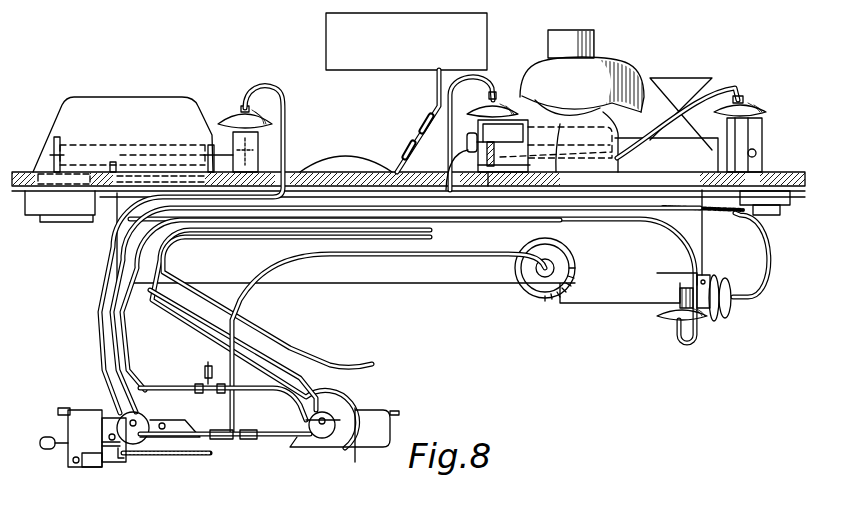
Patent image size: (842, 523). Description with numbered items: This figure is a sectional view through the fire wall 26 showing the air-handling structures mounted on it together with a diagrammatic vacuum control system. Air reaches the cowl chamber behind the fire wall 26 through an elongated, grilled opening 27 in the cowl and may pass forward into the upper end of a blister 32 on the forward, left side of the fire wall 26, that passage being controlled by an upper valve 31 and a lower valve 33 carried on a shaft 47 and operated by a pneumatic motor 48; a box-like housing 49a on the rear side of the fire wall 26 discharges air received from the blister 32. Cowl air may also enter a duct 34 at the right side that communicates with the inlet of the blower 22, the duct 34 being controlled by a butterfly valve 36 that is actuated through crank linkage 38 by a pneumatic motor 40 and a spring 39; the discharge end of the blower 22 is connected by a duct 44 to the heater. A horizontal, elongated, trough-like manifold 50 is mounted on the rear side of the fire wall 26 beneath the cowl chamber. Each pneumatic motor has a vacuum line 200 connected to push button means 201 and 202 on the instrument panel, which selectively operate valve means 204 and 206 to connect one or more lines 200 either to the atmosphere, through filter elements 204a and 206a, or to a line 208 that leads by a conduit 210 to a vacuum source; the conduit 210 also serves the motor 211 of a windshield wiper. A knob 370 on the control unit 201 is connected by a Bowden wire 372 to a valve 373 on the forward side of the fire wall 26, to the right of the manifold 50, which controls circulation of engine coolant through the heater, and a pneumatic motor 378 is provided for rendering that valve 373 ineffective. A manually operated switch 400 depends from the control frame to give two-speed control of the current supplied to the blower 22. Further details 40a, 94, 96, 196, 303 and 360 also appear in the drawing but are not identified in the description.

The blower 22 is at (620, 74).
The fire wall 26 is at (325, 172).
The grilled opening 27 is at (655, 192).
The upper valve 31 is at (85, 142).
The blister 32 is at (87, 115).
The lower valve 33 is at (145, 150).
The duct 34 is at (552, 108).
The butterfly valve 36 is at (618, 126).
The crank linkage 38 is at (530, 140).
The spring 39 is at (488, 186).
The pneumatic motor 40 is at (493, 100).
The valve connector 40a is at (467, 143).
The duct 44 is at (667, 115).
The shaft 47 is at (213, 150).
The pneumatic motor 48 is at (243, 106).
The box-like housing 49a is at (70, 222).
The manifold 50 is at (435, 270).
The diaphragm valve 94 is at (733, 316).
The valve 96 is at (672, 324).
The reel 196 is at (522, 295).
The vacuum line 200 is at (270, 100).
The push button means 201 is at (72, 450).
The push button means 202 is at (381, 450).
The valve means 204 is at (135, 442).
The filter element 204a is at (120, 414).
The valve means 206 is at (322, 440).
The filter element 206a is at (320, 424).
The line 208 is at (290, 360).
The conduit 210 is at (439, 78).
The windshield wiper motor 211 is at (362, 172).
The bracket 303 is at (64, 408).
The tab 360 is at (399, 413).
The knob 370 is at (46, 436).
The Bowden wire 372 is at (728, 212).
The valve 373 is at (783, 212).
The pneumatic motor 378 is at (755, 112).
The manually operated switch 400 is at (90, 467).